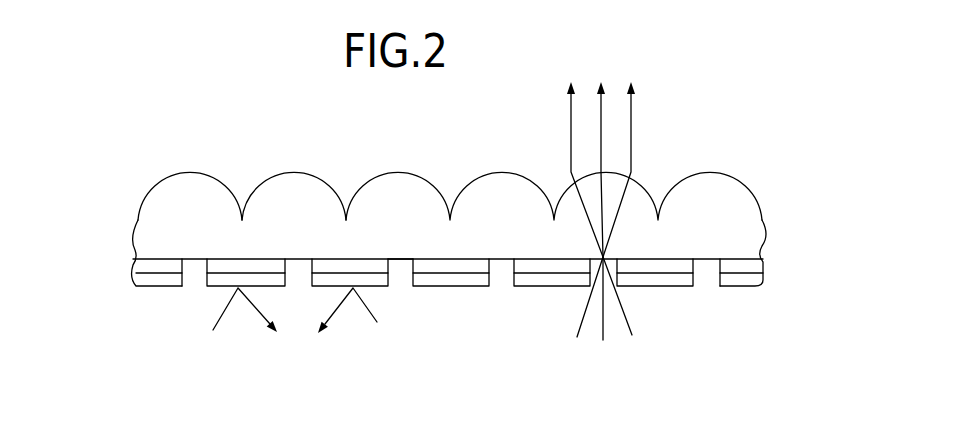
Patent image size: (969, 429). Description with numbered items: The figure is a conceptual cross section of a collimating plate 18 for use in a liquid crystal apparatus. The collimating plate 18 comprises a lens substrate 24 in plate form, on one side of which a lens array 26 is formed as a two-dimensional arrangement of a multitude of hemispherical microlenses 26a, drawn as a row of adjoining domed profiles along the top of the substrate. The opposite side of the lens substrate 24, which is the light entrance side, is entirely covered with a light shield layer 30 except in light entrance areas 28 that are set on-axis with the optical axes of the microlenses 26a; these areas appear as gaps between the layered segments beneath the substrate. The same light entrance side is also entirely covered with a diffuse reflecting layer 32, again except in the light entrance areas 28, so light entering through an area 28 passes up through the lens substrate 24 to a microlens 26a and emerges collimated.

The collimating plate 18 is at (782, 200).
The lens substrate 24 is at (152, 237).
The lens array 26 is at (151, 176).
The microlens 26a is at (303, 178).
The light entrance area 28 is at (400, 276).
The light shield layer 30 is at (688, 261).
The diffuse reflecting layer 32 is at (658, 275).